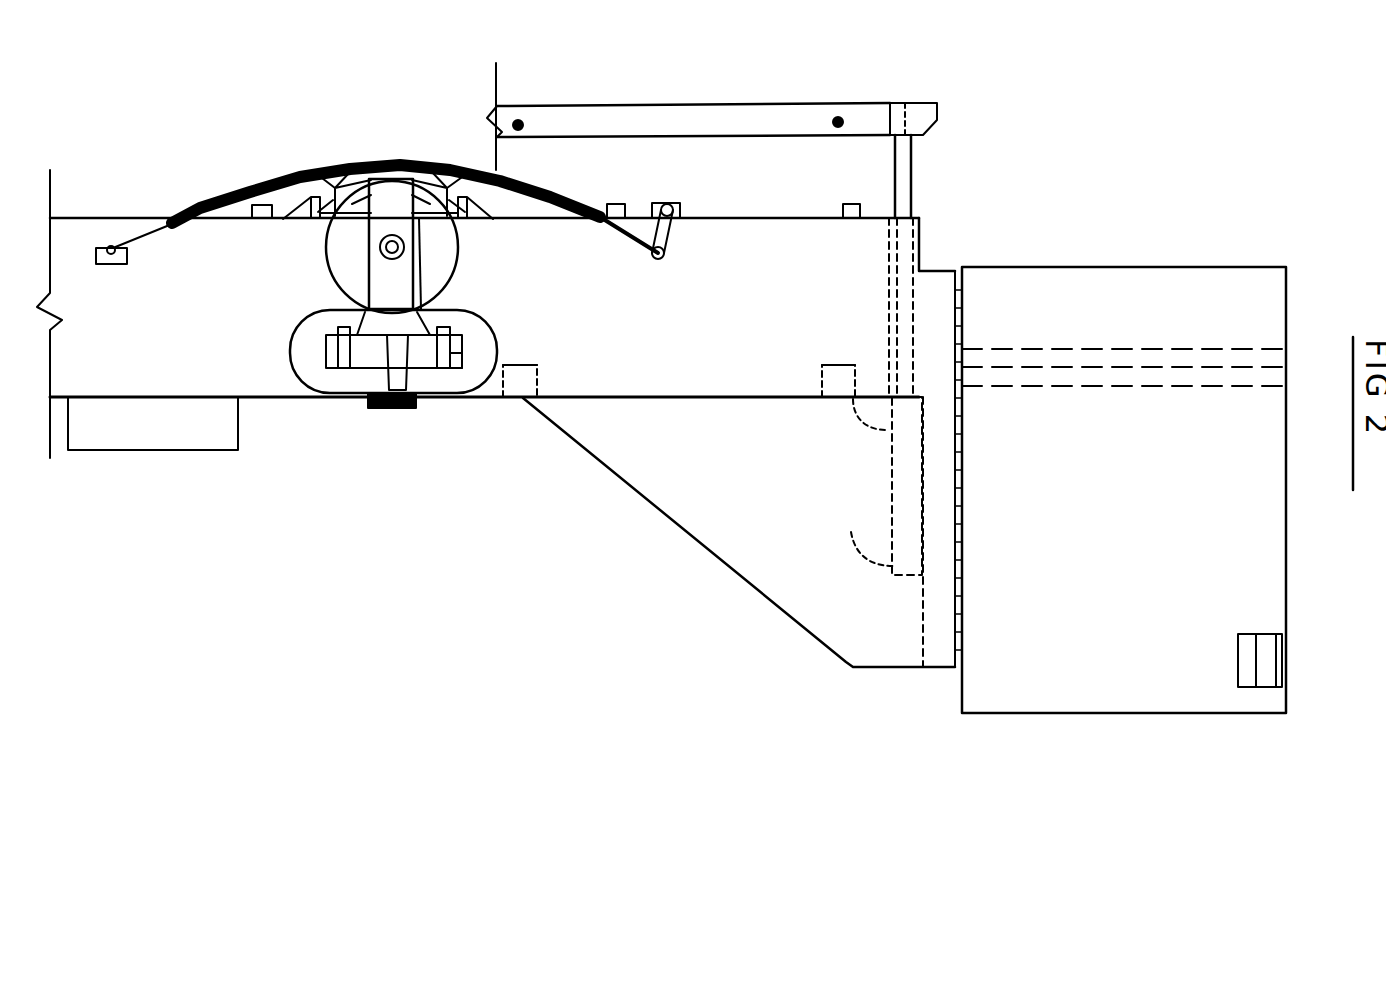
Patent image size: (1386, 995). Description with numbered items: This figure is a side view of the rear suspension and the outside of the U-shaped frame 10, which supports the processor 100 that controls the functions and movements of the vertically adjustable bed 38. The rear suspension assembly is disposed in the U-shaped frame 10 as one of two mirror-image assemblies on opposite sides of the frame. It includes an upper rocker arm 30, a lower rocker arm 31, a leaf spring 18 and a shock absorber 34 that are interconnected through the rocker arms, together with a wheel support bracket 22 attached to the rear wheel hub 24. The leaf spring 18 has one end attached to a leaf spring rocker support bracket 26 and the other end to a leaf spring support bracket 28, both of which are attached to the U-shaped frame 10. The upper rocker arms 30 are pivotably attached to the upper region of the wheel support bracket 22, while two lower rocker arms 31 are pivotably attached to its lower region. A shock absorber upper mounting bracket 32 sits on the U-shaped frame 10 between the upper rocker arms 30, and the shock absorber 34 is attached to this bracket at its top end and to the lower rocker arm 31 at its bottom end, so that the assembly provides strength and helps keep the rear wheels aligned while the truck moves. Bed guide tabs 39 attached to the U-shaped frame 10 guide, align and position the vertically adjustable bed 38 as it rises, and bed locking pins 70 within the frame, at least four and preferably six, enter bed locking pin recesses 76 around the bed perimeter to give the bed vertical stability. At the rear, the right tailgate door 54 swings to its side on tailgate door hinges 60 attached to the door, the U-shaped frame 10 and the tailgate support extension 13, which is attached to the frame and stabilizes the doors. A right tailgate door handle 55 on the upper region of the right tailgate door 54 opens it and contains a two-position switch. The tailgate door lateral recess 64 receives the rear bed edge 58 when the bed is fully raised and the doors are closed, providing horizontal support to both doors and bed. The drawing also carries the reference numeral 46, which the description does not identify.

The U-shaped frame 10 is at (78, 214).
The tailgate support extension 13 is at (706, 552).
The leaf spring 18 is at (237, 190).
The wheel support bracket 22 is at (350, 322).
The rear wheel hub 24 is at (455, 286).
The leaf spring rocker support bracket 26 is at (672, 230).
The leaf spring support bracket 28 is at (103, 268).
The upper rocker arm 30 is at (297, 386).
The lower rocker arm 31 is at (338, 184).
The shock absorber upper mounting bracket 32 is at (391, 411).
The shock absorber 34 is at (415, 386).
The vertically adjustable bed 38 is at (702, 103).
The bed guide tabs 39 is at (263, 222).
The channel 46 is at (887, 528).
The right tailgate door 54 is at (1004, 718).
The right tailgate door handle 55 is at (1266, 631).
The rear bed edge 58 is at (940, 130).
The tailgate door hinges 60 is at (968, 526).
The tailgate door lateral recess 64 is at (1224, 347).
The bed locking pins 70 is at (521, 361).
The bed locking pin recesses 76 is at (518, 113).
The processor 100 is at (196, 456).